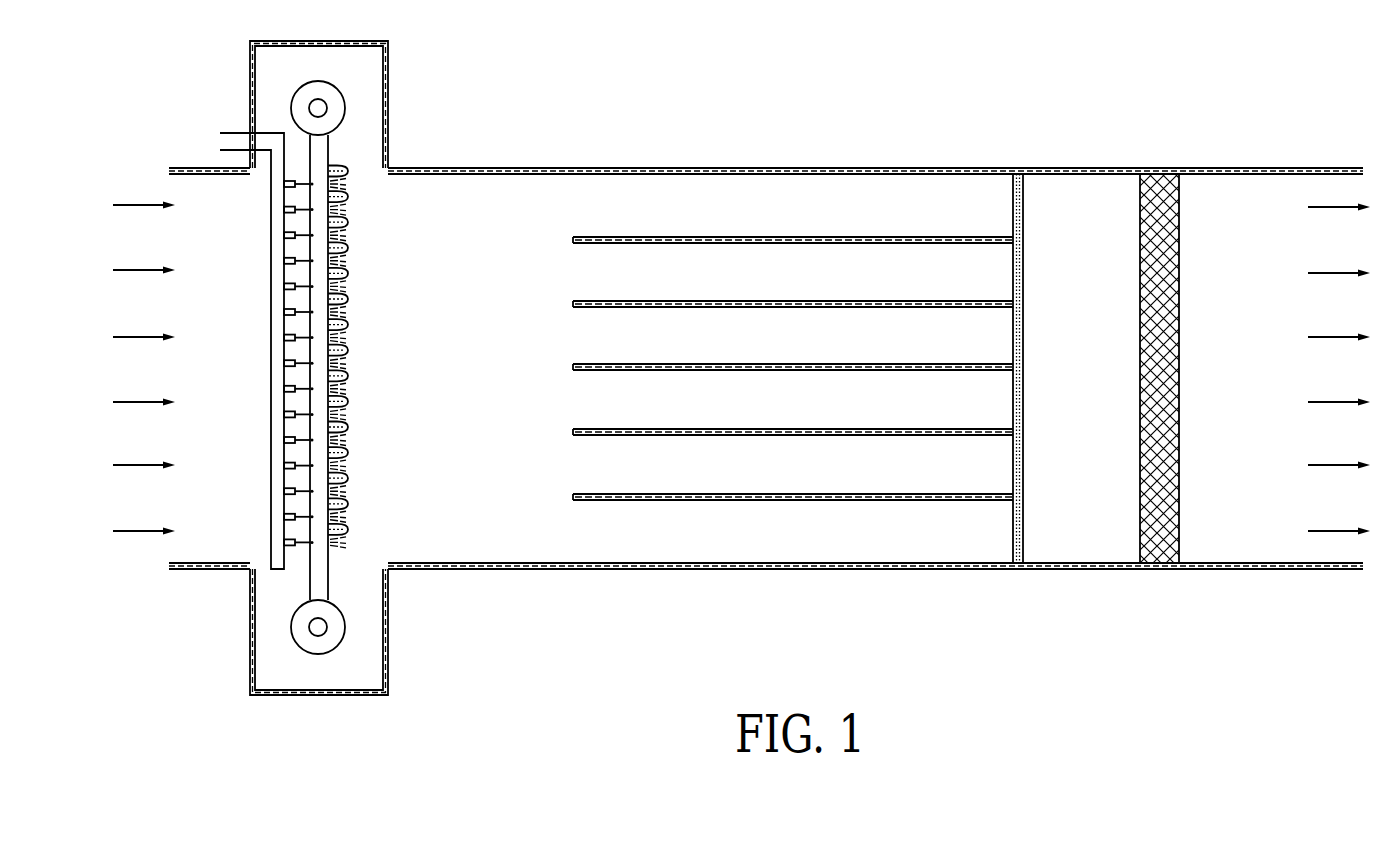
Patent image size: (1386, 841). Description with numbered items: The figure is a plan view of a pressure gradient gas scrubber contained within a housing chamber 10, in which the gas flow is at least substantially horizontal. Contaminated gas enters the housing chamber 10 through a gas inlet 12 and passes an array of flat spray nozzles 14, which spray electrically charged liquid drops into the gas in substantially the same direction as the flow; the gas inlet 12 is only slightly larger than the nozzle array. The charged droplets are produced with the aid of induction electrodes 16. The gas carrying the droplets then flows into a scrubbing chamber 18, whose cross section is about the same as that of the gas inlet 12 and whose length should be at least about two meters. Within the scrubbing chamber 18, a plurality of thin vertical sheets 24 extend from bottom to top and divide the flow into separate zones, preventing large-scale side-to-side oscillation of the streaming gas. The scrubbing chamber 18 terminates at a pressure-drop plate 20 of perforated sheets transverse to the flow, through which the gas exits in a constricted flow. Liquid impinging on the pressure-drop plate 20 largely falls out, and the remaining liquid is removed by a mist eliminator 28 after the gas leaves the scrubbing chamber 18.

The housing chamber 10 is at (1188, 166).
The gas inlet 12 is at (205, 576).
The spray nozzles 14 is at (285, 311).
The induction electrodes 16 is at (348, 299).
The scrubbing chamber 18 is at (1013, 577).
The pressure-drop plate 20 is at (1031, 256).
The vertical sheets 24 is at (828, 301).
The mist eliminator 28 is at (1179, 262).